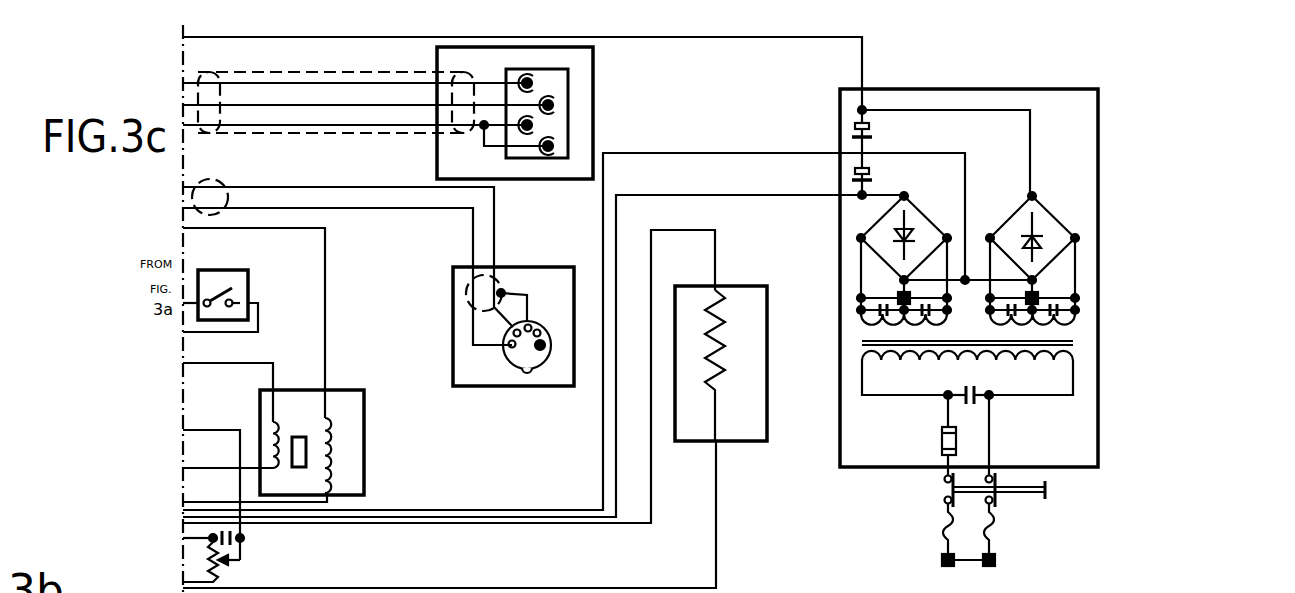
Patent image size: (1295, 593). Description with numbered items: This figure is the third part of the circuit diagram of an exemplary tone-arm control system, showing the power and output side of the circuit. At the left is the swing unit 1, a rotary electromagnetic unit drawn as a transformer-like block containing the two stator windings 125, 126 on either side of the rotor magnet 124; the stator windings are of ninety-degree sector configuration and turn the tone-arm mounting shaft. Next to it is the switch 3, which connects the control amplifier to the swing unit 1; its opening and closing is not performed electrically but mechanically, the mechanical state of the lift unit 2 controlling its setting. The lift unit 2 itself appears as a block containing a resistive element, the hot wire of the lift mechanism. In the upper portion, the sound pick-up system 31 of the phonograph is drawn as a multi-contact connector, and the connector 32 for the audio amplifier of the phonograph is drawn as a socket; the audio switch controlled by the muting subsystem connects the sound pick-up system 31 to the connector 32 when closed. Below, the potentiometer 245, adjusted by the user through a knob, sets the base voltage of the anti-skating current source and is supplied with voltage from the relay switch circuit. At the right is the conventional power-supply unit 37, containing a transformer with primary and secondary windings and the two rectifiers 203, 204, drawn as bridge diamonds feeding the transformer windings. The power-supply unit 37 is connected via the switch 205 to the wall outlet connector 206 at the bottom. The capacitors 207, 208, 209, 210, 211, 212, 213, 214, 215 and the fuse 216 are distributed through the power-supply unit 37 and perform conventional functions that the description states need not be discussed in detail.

The swing unit 1 is at (297, 430).
The lift unit 2 is at (768, 350).
The switch 3 is at (249, 281).
The sound pick-up system 31 is at (594, 75).
The connector 32 is at (517, 388).
The power-supply unit 37 is at (1062, 61).
The rotor magnet 124 is at (303, 436).
The stator winding 125 is at (278, 420).
The stator winding 126 is at (331, 458).
The rectifier 203 is at (948, 211).
The rectifier 204 is at (1052, 224).
The switch 205 is at (1019, 490).
The wall outlet connector 206 is at (971, 563).
The capacitor 207 is at (871, 126).
The capacitor 208 is at (871, 171).
The capacitor 209 is at (898, 298).
The capacitor 210 is at (868, 320).
The capacitor 211 is at (920, 318).
The capacitor 212 is at (1040, 297).
The capacitor 213 is at (1015, 318).
The capacitor 214 is at (1060, 316).
The capacitor 215 is at (989, 393).
The fuse 216 is at (942, 444).
The potentiometer 245 is at (216, 581).